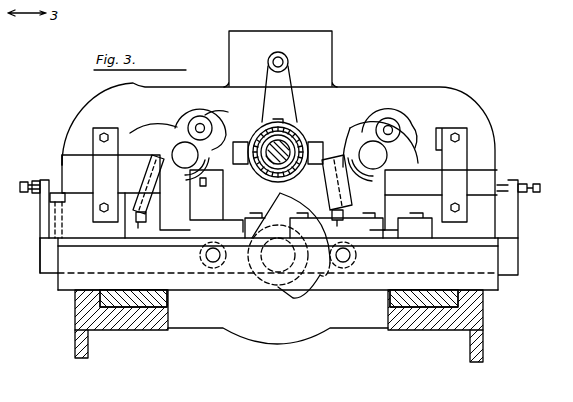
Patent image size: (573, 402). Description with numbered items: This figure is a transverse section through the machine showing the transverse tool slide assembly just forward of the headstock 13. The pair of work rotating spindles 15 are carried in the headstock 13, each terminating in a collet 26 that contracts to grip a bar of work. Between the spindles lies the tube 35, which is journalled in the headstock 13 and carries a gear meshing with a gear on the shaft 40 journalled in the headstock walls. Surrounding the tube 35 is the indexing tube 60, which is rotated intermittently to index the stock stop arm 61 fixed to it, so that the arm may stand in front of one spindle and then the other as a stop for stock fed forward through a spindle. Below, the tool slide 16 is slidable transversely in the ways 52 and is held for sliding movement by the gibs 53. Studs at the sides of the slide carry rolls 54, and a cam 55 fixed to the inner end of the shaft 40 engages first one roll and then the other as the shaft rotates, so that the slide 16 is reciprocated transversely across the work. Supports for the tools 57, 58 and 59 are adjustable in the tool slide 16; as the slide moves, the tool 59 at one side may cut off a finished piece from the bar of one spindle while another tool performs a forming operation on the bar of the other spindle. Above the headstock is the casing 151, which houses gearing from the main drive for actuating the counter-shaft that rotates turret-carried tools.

The headstock 13 is at (402, 80).
The work rotating spindle 15 is at (357, 134).
The transverse tool slide 16 is at (525, 233).
The collet 26 is at (403, 157).
The tube 35 is at (264, 138).
The shaft 40 is at (268, 268).
The ways 52 is at (495, 283).
The gib 53 is at (48, 254).
The roll 54 is at (349, 268).
The cam 55 is at (298, 293).
The tool 57 is at (158, 154).
The tool 58 is at (205, 190).
The tool 59 is at (214, 130).
The indexing tube 60 is at (298, 131).
The stock stop arm 61 is at (287, 78).
The casing 151 is at (323, 45).